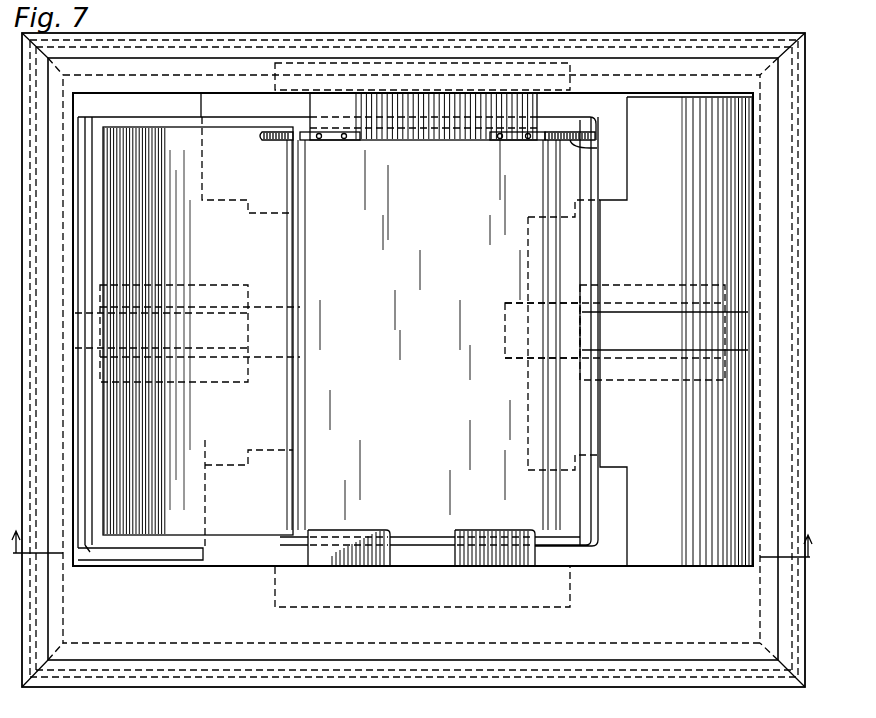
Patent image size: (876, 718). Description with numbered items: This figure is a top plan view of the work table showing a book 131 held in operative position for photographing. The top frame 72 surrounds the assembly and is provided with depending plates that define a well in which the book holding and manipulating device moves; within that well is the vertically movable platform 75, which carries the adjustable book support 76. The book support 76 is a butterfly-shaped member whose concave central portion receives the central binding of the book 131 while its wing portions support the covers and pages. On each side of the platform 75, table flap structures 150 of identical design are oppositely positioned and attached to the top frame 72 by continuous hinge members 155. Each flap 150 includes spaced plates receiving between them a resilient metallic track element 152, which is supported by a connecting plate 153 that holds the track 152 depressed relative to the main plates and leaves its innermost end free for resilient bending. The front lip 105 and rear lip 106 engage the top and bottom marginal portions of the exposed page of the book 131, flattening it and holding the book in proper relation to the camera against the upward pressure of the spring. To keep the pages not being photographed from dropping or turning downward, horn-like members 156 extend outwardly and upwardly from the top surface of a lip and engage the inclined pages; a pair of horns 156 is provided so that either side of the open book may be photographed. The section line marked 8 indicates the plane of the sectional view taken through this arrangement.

The top frame 72 is at (468, 25).
The platform 75 is at (662, 62).
The section line 8- 8 is at (412, 564).
The table flap structure 150 is at (206, 465).
The continuous hinge member 155 is at (753, 197).
The book 131 is at (560, 540).
The rear lip 106 is at (437, 133).
The front lip 105 is at (472, 540).
The horn-like member 156 is at (269, 142).
The book support 76 is at (597, 332).
The connecting plate 153 is at (172, 383).
The resilient metallic track element 152 is at (268, 315).